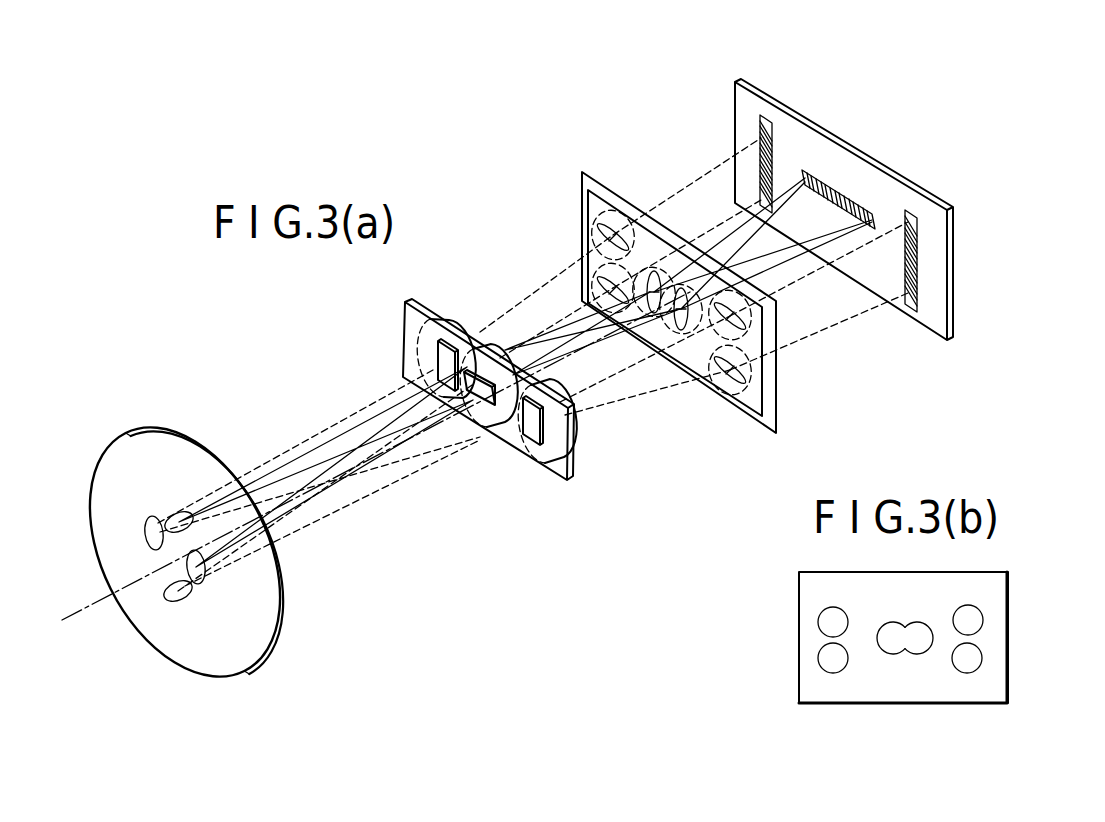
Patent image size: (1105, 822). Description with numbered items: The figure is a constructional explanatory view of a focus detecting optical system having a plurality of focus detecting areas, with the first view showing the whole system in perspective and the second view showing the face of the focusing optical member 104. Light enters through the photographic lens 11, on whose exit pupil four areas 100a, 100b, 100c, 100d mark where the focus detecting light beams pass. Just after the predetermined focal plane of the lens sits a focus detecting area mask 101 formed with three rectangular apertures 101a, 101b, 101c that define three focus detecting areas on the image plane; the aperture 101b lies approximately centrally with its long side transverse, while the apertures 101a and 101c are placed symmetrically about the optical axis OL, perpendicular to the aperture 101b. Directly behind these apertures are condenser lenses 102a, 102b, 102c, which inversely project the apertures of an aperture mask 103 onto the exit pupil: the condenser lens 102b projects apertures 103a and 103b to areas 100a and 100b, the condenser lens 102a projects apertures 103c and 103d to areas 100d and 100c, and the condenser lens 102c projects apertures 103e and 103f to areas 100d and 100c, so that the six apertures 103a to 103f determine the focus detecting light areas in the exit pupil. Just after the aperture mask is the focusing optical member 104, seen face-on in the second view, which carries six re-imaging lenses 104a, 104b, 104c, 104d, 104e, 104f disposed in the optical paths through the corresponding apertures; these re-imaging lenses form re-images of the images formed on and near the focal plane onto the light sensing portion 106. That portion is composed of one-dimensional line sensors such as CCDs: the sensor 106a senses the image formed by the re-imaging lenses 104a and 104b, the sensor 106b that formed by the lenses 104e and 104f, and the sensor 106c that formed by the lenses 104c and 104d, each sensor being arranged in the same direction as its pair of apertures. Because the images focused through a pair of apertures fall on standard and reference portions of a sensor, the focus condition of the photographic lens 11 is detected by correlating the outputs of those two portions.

The photographic lens 11 is at (208, 680).
The optical axis OL is at (359, 468).
The area of passing of focus detecting light beam 100a is at (201, 576).
The area of passing of focus detecting light beam 100b is at (152, 519).
The area of passing of focus detecting light beam 100c is at (178, 513).
The area of passing of focus detecting light beam 100d is at (183, 599).
The focus detecting area mask 101 is at (557, 474).
The aperture 101a is at (437, 361).
The aperture 101b is at (490, 407).
The aperture 101c is at (545, 440).
The condenser lens 102a is at (449, 321).
The condenser lens 102b is at (492, 345).
The condenser lens 102c is at (565, 386).
The aperture mask 103 is at (740, 420).
The aperture 103a is at (652, 275).
The aperture 103b is at (682, 288).
The aperture 103c is at (600, 210).
The aperture 103d is at (600, 278).
The aperture 103e is at (748, 316).
The aperture 103f is at (750, 372).
The focusing optical member 104 is at (778, 400).
In FIG. 3b, the focusing optical member 104 is at (985, 703).
In FIG. 3b, the re-imaging lens 104a is at (890, 655).
In FIG. 3b, the re-imaging lens 104b is at (920, 655).
In FIG. 3b, the re-imaging lens 104c is at (818, 618).
In FIG. 3b, the re-imaging lens 104d is at (820, 663).
In FIG. 3b, the re-imaging lens 104e is at (983, 624).
In FIG. 3b, the re-imaging lens 104f is at (982, 661).
The light sensing portion 106 is at (790, 102).
The sensor 106a is at (836, 183).
The sensor 106b is at (912, 225).
The sensor 106c is at (760, 124).